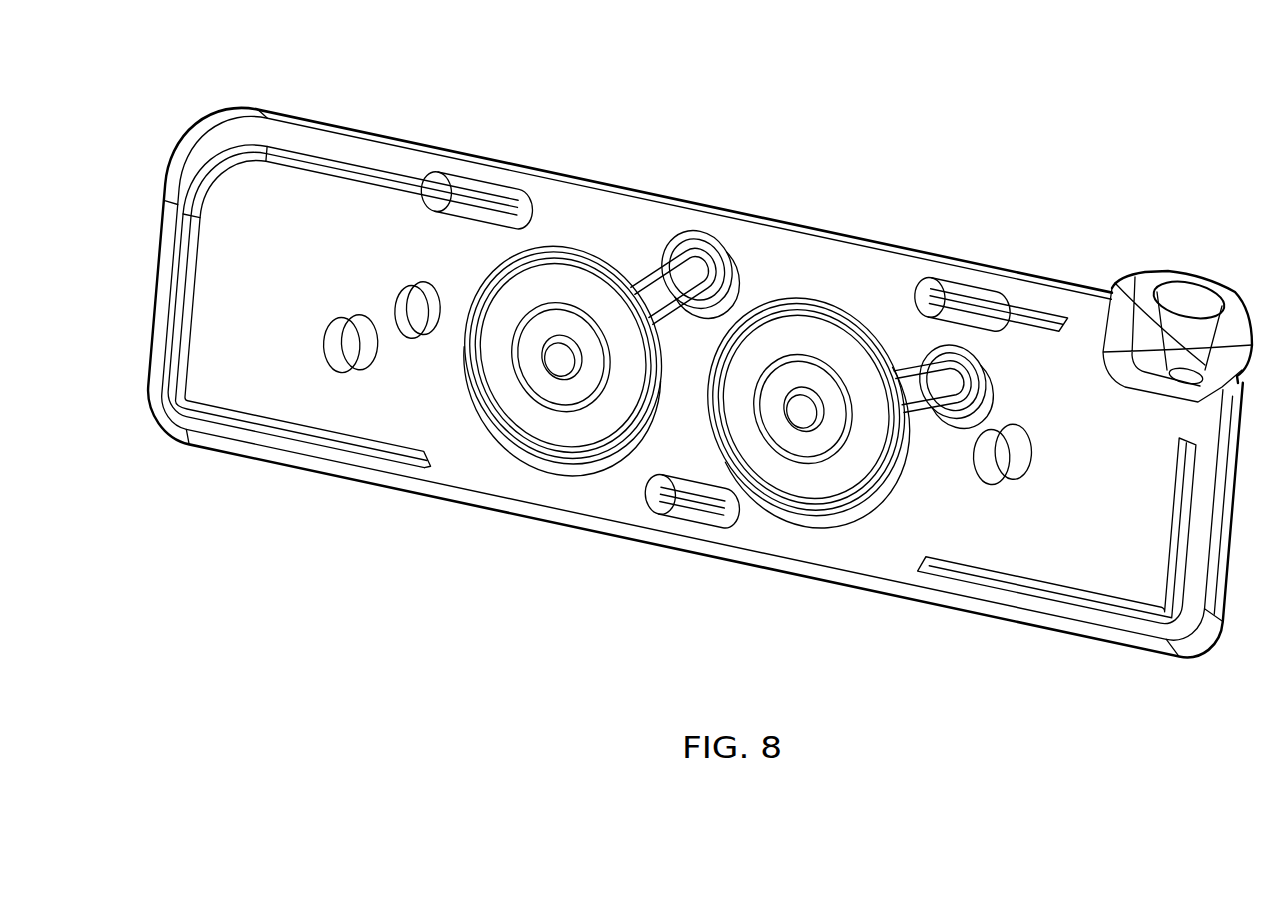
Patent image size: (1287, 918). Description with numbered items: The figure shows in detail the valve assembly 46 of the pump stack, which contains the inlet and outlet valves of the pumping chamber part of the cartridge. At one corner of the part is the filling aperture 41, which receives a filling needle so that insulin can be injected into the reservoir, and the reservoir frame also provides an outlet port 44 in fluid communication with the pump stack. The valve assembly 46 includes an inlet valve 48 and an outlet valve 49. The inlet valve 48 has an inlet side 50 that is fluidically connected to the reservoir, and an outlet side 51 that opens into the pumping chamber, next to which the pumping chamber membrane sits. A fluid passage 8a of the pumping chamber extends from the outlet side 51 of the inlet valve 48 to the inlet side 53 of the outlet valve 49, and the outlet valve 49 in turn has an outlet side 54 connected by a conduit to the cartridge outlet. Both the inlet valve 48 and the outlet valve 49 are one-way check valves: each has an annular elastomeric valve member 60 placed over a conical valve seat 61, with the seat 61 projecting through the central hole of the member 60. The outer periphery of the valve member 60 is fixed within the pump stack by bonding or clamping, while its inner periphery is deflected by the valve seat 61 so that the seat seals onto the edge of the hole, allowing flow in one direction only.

The valve assembly 46 is at (763, 166).
The filling aperture 41 is at (1200, 296).
The outlet port 44 is at (951, 378).
The inlet valve 48 is at (829, 311).
The outlet valve 49 is at (560, 253).
The inlet side 50 is at (872, 322).
The outlet side 51 is at (768, 360).
The inlet side 53 is at (620, 256).
The outlet side 54 is at (537, 411).
The annular elastomeric valve member 60 is at (520, 368).
The conical valve seat 61 is at (556, 354).
The fluid passage 8a is at (697, 266).